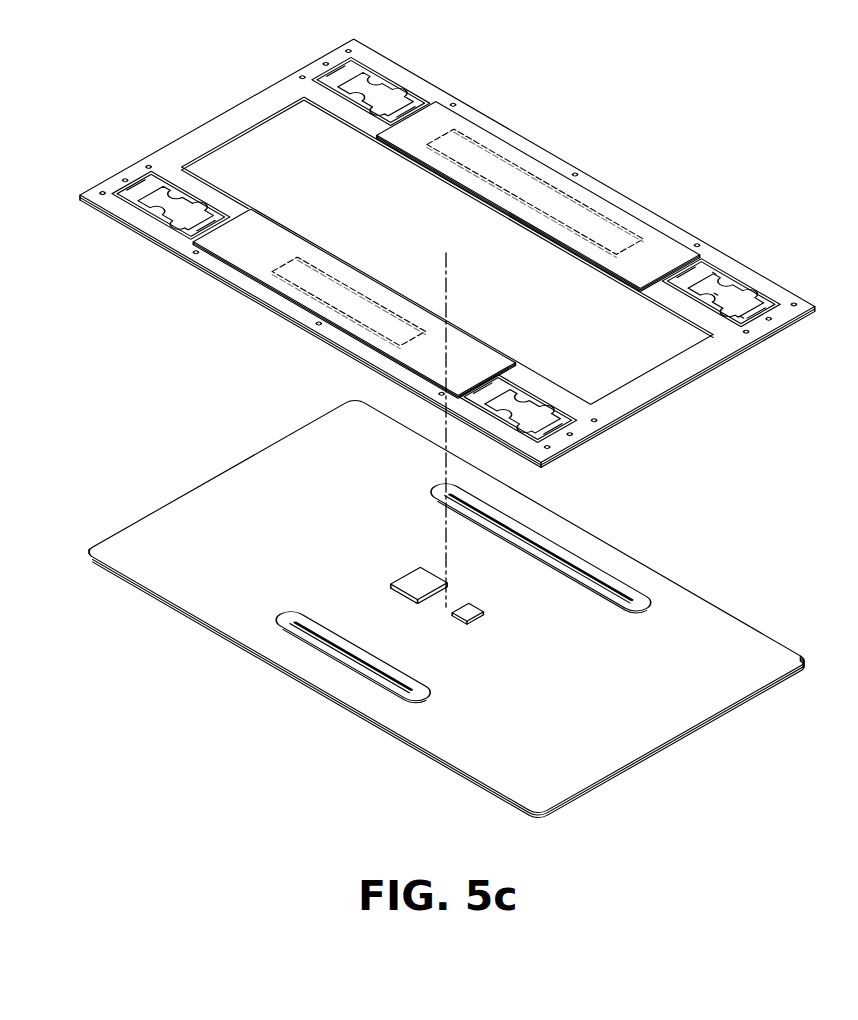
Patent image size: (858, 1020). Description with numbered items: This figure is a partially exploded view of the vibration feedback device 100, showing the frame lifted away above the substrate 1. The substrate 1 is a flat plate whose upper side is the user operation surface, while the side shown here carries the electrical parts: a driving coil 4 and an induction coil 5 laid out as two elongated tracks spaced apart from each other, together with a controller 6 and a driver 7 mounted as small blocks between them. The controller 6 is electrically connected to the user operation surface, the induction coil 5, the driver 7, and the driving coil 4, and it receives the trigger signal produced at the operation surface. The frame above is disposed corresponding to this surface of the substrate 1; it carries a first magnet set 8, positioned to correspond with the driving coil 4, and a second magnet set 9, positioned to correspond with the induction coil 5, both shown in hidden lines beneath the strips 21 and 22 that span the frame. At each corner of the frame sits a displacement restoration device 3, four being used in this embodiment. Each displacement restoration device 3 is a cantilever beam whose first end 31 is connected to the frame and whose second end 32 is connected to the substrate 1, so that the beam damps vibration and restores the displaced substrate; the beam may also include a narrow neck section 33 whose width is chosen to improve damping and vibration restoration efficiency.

The vibration feedback device 100 is at (722, 131).
The substrate 1 is at (130, 545).
The first cross bar 21 is at (440, 118).
The second cross bar 22 is at (241, 247).
The displacement restoration device 3 is at (162, 180).
The first end 31 is at (753, 313).
The second end 32 is at (697, 279).
The narrow neck section 33 is at (720, 291).
The driving coil 4 is at (631, 594).
The induction coil 5 is at (279, 620).
The controller 6 is at (417, 583).
The driver 7 is at (478, 618).
The first magnet set 8 is at (503, 163).
The second magnet set 9 is at (307, 293).